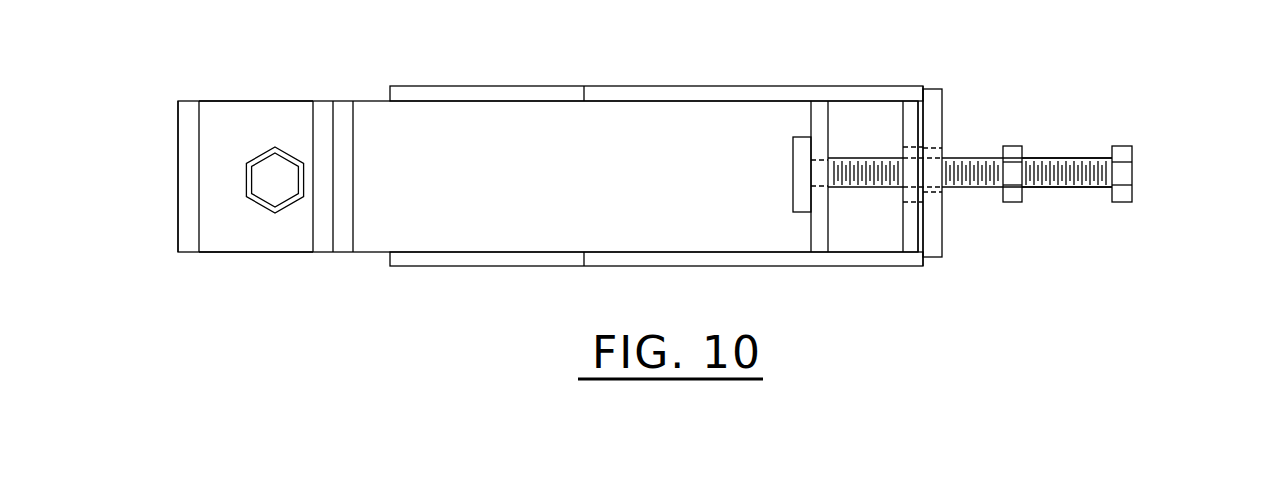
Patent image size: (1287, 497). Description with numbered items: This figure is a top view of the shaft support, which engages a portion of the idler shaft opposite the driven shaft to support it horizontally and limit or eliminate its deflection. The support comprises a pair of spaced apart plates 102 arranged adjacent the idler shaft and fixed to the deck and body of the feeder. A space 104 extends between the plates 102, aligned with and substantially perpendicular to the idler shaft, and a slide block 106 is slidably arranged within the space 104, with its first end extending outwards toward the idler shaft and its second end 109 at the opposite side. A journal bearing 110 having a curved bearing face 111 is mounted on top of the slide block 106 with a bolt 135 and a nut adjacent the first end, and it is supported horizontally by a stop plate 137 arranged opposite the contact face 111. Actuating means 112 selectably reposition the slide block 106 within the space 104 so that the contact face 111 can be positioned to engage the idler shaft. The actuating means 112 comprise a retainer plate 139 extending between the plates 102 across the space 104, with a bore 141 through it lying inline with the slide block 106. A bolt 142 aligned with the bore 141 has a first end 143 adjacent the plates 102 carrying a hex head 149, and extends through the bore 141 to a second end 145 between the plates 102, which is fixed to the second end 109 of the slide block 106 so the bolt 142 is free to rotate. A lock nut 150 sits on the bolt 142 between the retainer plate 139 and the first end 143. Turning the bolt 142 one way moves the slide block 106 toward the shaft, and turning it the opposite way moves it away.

The plates 102 is at (718, 92).
The space 104 is at (865, 107).
The slide block 106 is at (390, 128).
The second end 109 is at (820, 223).
The journal bearing 110 is at (280, 115).
The curved bearing face 111 is at (188, 202).
The actuating means 112 is at (1066, 152).
The bolt 135 is at (270, 173).
The stop plate 137 is at (343, 185).
The retainer plate 139 is at (935, 110).
The bore 141 is at (933, 150).
The bolt 142 is at (988, 180).
The first end 143 is at (1097, 187).
The second end 145 is at (847, 163).
The hex head 149 is at (1122, 150).
The lock nut 150 is at (1013, 150).